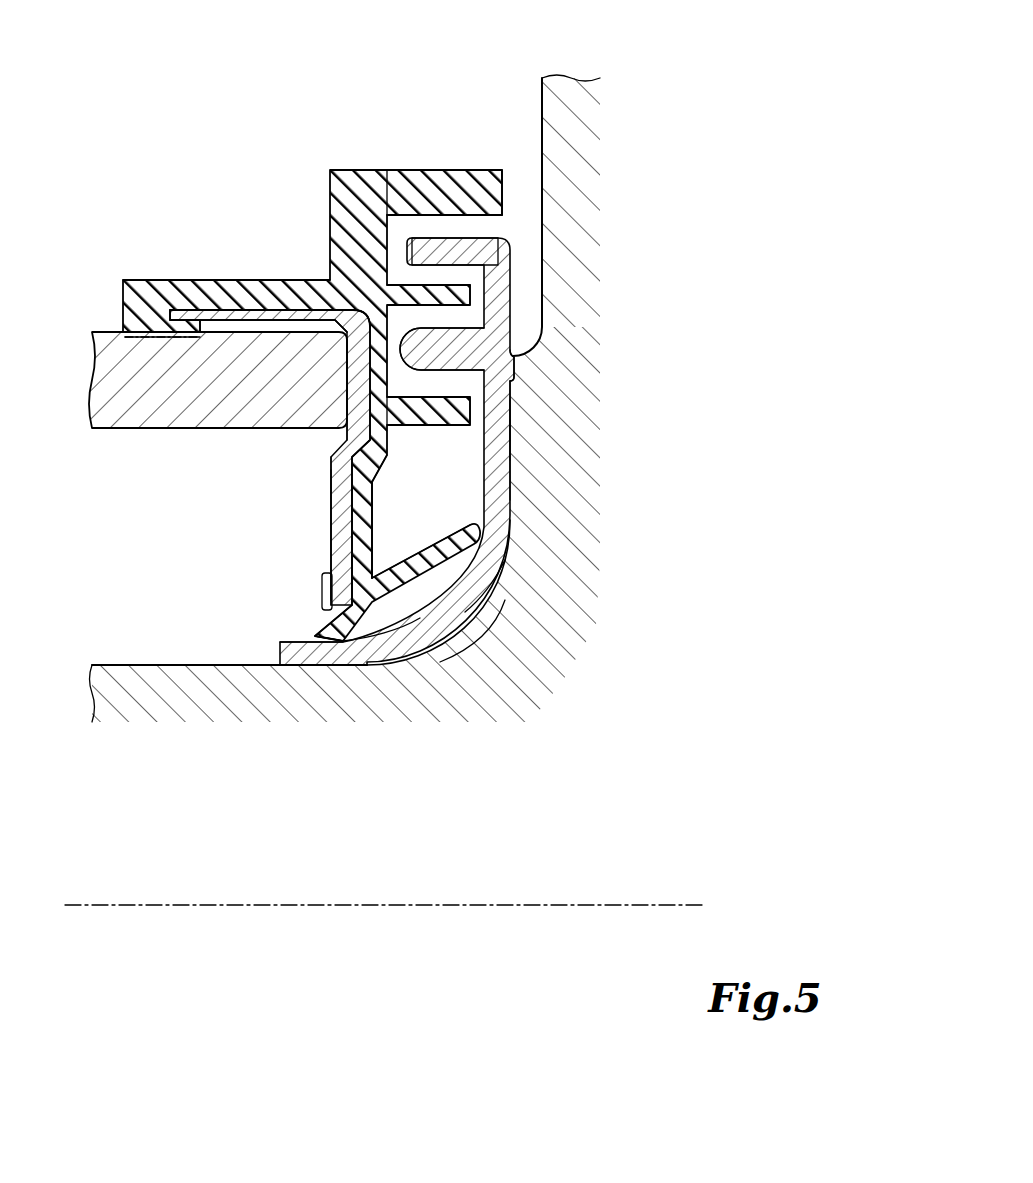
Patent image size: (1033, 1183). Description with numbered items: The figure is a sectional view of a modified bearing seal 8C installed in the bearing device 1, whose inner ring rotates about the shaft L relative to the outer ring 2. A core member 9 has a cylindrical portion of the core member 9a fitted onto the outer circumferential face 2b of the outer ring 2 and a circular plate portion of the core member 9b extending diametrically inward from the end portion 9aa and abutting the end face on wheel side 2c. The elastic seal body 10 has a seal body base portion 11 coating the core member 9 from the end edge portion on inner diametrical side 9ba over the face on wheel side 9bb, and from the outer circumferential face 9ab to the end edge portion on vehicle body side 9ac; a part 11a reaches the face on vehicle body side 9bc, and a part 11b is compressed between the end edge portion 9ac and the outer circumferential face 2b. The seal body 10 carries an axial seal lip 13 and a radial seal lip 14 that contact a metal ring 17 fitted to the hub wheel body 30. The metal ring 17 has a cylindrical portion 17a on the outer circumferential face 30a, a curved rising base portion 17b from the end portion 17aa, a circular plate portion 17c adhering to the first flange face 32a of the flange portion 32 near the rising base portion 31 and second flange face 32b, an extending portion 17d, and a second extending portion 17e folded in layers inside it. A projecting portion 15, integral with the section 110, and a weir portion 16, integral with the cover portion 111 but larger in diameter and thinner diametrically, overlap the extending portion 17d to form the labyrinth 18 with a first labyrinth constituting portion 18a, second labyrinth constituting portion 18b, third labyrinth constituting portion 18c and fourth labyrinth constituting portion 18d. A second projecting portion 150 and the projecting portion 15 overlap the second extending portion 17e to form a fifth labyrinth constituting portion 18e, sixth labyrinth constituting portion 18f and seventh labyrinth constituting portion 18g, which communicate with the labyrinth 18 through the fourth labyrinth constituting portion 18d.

The bearing device 1 is at (346, 59).
The outer ring 2 is at (113, 417).
The outer circumferential face 2b is at (210, 316).
The end face on wheel side 2c is at (395, 304).
The bearing seal 8C is at (289, 561).
The core member 9 is at (196, 462).
The cylindrical portion of the core member 9a is at (262, 314).
The end portion 9aa is at (345, 305).
The outer circumferential face 9ab is at (272, 307).
The end edge portion on vehicle body side 9ac is at (168, 313).
The circular plate portion of the core member 9b is at (340, 513).
The end edge portion on inner diametrical side 9ba is at (328, 624).
The face on wheel side 9bb is at (374, 543).
The face on vehicle body side 9bc is at (330, 547).
The seal body 10 is at (528, 448).
The seal body base portion 11 is at (400, 472).
The section covering the circular plate portion 110 is at (367, 505).
The cover portion 111 is at (240, 293).
The part of the seal base portion 11a is at (321, 582).
The part of the seal base portion 11b is at (180, 340).
The seal lip 13 is at (450, 597).
The seal lip 14 is at (333, 648).
The projecting portion 15 is at (482, 338).
The second projecting portion 150 is at (513, 430).
The weir portion 16 is at (465, 185).
The metal ring 17 is at (505, 607).
The cylindrical portion 17a is at (296, 656).
The end portion 17aa is at (375, 652).
The rising base portion 17b is at (447, 613).
The circular plate portion 17c is at (500, 418).
The extending portion 17d is at (423, 248).
The second extending portion 17e is at (516, 360).
The labyrinth 18 is at (395, 213).
The first labyrinth constituting portion 18a is at (440, 225).
The second labyrinth constituting portion 18b is at (457, 273).
The third labyrinth constituting portion 18c is at (505, 195).
The fourth labyrinth constituting portion 18d is at (477, 295).
The fifth labyrinth constituting portion 18e is at (415, 395).
The sixth labyrinth constituting portion 18f is at (378, 455).
The seventh labyrinth constituting portion 18g is at (515, 392).
The hub wheel body 30 is at (132, 675).
The outer circumferential face 30a is at (210, 665).
The rising base portion 31 is at (503, 640).
The flange portion 32 is at (550, 98).
The first flange face 32a is at (482, 478).
The second flange face 32b is at (541, 153).
The shaft L is at (672, 905).